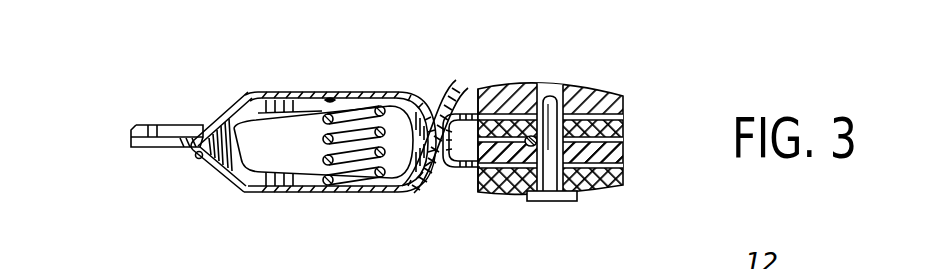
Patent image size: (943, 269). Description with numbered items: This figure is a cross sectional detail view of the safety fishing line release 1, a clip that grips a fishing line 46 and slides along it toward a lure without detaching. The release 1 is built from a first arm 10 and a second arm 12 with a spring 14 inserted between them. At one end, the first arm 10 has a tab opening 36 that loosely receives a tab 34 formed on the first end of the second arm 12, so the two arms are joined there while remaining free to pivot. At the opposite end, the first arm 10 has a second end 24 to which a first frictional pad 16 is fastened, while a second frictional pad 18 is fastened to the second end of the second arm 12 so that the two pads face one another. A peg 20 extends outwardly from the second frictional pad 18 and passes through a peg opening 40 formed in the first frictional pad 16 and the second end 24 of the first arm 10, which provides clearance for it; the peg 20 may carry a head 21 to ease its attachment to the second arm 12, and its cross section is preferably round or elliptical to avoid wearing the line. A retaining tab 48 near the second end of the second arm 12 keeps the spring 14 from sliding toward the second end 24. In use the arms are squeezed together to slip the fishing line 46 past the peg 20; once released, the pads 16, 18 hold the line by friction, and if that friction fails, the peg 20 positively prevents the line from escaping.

The safety fishing line release 1 is at (128, 128).
The first arm 10 is at (297, 197).
The second arm 12 is at (288, 91).
The spring 14 is at (365, 175).
The first frictional pad 16 is at (623, 128).
The second frictional pad 18 is at (623, 152).
The peg 20 is at (578, 136).
The head 21 is at (551, 198).
The second end 24 is at (614, 100).
The tab 34 is at (193, 160).
The tab opening 36 is at (190, 132).
The peg opening 40 is at (552, 97).
The fishing line 46 is at (530, 136).
The retaining tab 48 is at (420, 94).